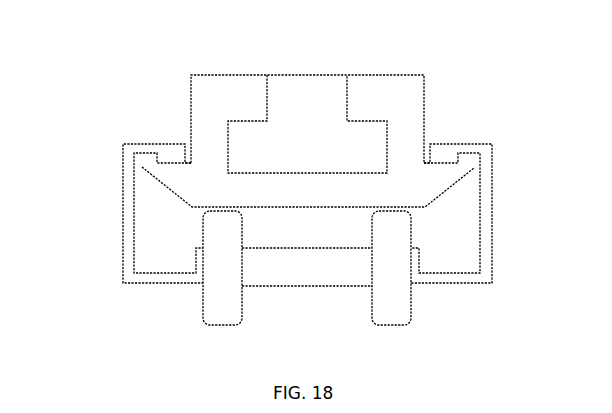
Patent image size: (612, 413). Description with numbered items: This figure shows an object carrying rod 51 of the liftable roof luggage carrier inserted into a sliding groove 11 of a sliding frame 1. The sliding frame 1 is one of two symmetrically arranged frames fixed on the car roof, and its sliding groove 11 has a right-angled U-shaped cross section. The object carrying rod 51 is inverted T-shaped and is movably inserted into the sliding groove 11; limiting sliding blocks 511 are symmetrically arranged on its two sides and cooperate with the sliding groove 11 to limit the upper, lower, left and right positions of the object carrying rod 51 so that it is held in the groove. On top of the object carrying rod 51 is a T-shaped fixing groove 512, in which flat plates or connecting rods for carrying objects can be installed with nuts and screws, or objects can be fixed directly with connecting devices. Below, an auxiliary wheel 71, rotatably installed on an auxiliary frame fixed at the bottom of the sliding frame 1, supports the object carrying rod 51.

The sliding frame 1 is at (491, 213).
The sliding groove 11 is at (449, 245).
The object carrying rod 51 is at (382, 95).
The limiting sliding block 511 is at (177, 178).
The fixing groove 512 is at (326, 110).
The auxiliary wheel 71 is at (387, 286).